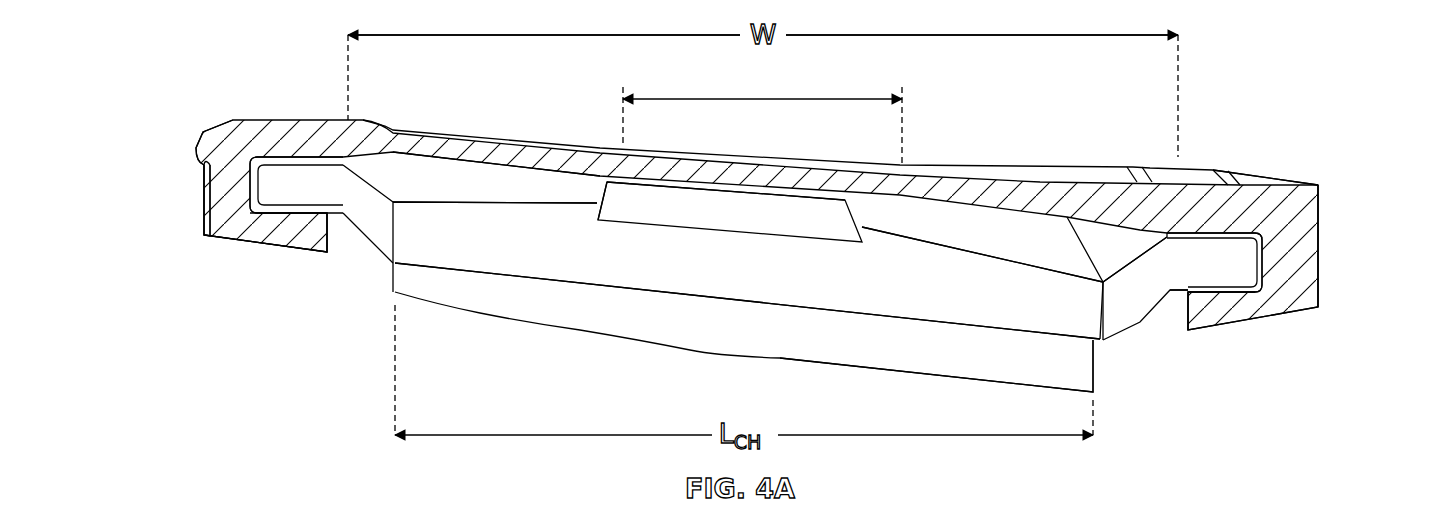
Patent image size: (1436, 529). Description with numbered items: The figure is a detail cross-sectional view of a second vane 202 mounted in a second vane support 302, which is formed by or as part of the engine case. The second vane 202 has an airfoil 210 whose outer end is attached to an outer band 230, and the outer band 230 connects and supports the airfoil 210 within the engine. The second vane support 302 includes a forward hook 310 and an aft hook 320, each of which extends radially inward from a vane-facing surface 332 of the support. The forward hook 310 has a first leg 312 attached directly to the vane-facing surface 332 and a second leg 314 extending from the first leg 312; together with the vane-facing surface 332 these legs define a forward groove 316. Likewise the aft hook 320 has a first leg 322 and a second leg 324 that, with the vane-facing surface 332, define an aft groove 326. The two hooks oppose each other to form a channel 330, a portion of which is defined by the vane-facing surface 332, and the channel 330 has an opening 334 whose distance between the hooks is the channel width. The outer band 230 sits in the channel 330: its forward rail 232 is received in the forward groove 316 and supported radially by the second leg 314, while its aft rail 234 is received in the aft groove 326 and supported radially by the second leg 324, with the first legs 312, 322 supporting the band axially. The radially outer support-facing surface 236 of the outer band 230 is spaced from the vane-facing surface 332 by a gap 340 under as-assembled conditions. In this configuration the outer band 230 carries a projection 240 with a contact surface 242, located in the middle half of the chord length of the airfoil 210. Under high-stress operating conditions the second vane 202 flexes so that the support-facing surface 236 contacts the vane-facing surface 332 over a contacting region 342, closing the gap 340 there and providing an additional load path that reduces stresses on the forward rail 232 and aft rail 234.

The second vane 202 is at (1057, 368).
The airfoil 210 is at (468, 293).
The outer band 230 is at (602, 258).
The forward rail 232 is at (297, 197).
The aft rail 234 is at (1207, 265).
The support-facing surface 236 is at (970, 245).
The projection 240 is at (825, 220).
The contact surface 242 is at (738, 185).
The second vane support 302 is at (1077, 195).
The forward hook 310 is at (175, 225).
The first leg 312 is at (210, 200).
The second leg 314 is at (312, 238).
The forward groove 316 is at (278, 177).
The aft hook 320 is at (1330, 280).
The first leg 322 is at (1307, 237).
The second leg 324 is at (1198, 317).
The aft groove 326 is at (1232, 270).
The channel 330 is at (470, 182).
The vane-facing surface 332 is at (1013, 217).
The opening 334 is at (827, 283).
The gap 340 is at (602, 175).
The contacting region 342 is at (765, 99).